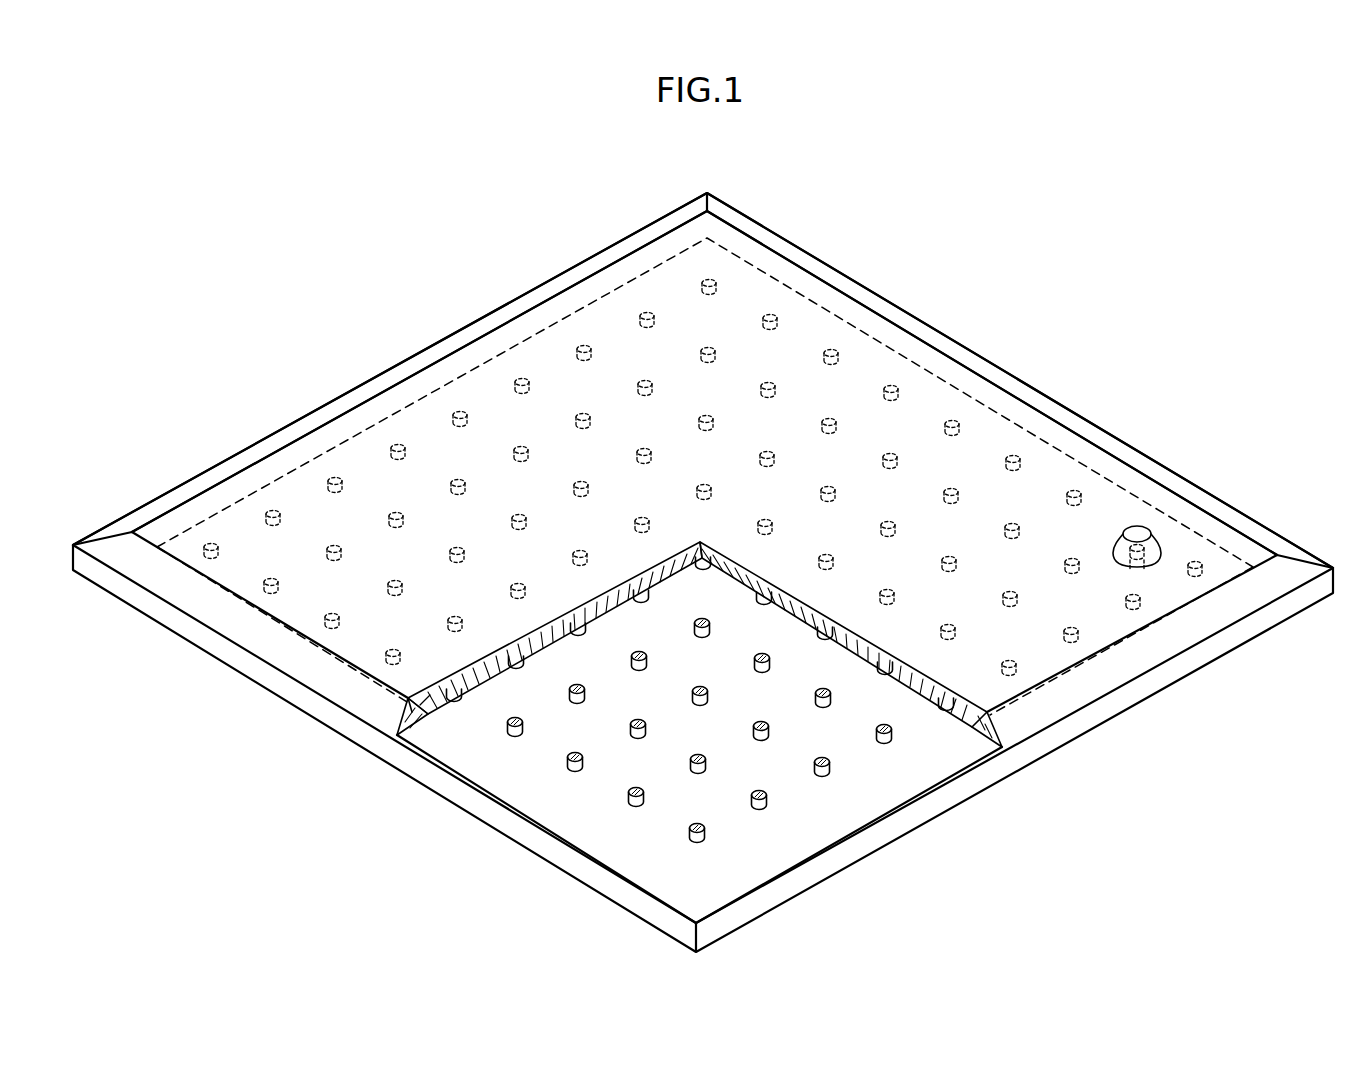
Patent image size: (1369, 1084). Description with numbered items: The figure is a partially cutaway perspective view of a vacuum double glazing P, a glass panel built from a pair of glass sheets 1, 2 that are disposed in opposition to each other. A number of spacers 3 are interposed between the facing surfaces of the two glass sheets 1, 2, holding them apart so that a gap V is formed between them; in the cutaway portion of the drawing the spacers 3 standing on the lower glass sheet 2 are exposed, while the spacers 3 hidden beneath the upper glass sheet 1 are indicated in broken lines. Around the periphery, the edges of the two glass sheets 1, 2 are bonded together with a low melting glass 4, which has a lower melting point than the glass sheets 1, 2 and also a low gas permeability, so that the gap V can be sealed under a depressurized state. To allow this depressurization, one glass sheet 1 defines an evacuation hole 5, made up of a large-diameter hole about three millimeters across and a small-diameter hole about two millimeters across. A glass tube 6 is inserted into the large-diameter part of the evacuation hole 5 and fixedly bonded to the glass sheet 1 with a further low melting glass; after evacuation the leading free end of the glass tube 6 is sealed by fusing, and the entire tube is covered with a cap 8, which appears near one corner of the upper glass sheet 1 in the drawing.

The double glazing P is at (318, 342).
The glass sheet 1 is at (980, 445).
The glass sheet 2 is at (890, 822).
The spacers 3 is at (585, 352).
The low melting glass 4 is at (325, 680).
The evacuation hole 5 is at (1133, 573).
The glass tube 6 is at (1143, 523).
The cap 8 is at (1150, 542).
The gap V is at (483, 683).